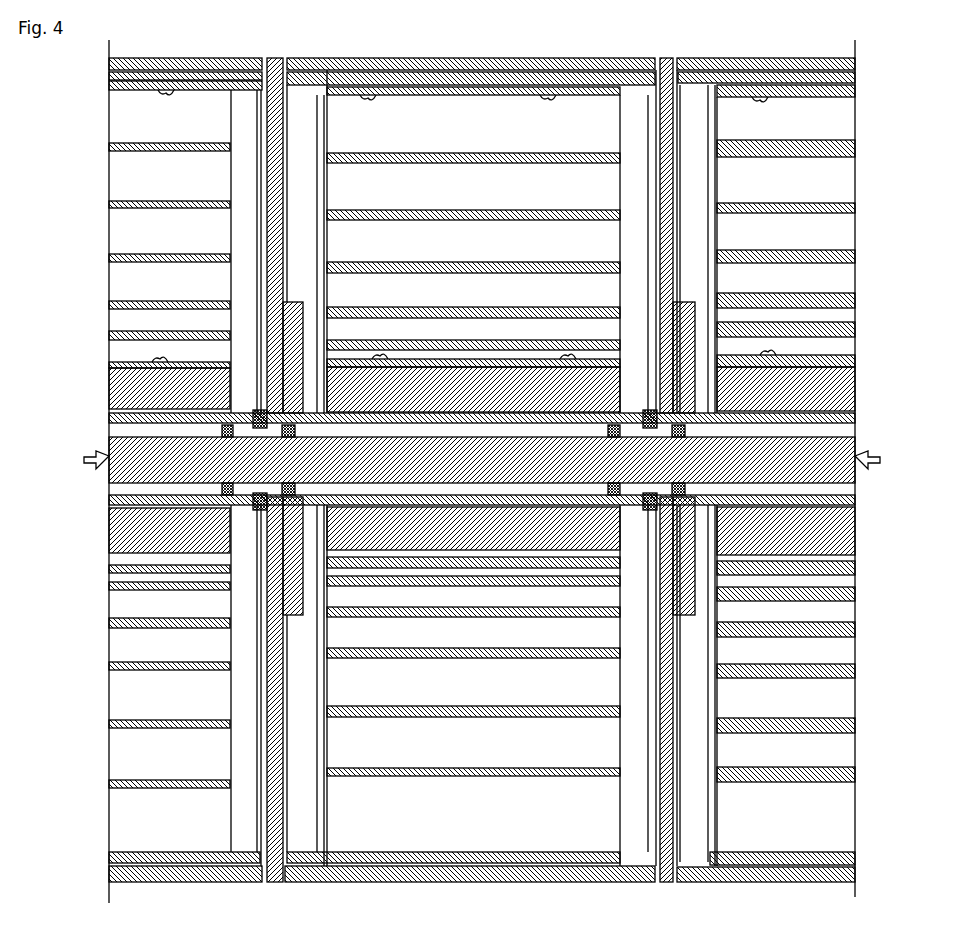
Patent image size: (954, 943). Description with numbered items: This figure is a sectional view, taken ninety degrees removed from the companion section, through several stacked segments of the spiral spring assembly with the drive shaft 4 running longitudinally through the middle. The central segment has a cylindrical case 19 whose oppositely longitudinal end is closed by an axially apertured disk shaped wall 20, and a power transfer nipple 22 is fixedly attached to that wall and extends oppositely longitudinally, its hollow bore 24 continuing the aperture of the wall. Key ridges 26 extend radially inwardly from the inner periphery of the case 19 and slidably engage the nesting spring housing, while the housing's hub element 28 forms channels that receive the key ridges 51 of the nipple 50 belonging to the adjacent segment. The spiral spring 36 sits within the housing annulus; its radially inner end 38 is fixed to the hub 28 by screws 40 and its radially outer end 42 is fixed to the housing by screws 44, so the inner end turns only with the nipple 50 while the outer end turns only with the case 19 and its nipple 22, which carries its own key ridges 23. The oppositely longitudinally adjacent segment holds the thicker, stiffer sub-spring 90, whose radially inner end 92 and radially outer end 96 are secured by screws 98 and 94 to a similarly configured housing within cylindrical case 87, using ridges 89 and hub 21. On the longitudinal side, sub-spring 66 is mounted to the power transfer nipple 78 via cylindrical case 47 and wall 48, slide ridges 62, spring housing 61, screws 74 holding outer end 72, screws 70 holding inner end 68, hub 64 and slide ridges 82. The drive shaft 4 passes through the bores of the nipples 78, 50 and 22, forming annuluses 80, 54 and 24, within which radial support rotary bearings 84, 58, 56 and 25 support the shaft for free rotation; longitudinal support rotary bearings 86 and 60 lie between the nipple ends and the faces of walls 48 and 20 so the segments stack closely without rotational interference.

The drive shaft 4 is at (875, 460).
The cylindrical case 19 is at (480, 58).
The disk shaped wall 20 is at (667, 70).
The hub 21 is at (845, 390).
The power transfer nipple 22 is at (840, 418).
The key ridges 23 is at (702, 540).
The hollow bore 24 is at (840, 432).
The radial support rotary bearing 25 is at (688, 432).
The key ridges 26 is at (306, 93).
The hub element 28 is at (318, 397).
The spiral spring 36 is at (450, 240).
The radially inner end 38 is at (462, 365).
The screws 40 is at (380, 360).
The radially outer end 42 is at (415, 95).
The screws 44 is at (548, 95).
The cylindrical case 47 is at (120, 66).
The wall 48 is at (277, 72).
The power transfer nipple 50 is at (485, 418).
The key ridges 51 is at (630, 410).
The annulus 54 is at (421, 430).
The radial support rotary bearing 56 is at (605, 490).
The radial support rotary bearing 58 is at (300, 430).
The longitudinal support rotary bearing 60 is at (645, 505).
The spring housing 61 is at (125, 77).
The slide ridges 62 is at (264, 75).
The hub 64 is at (122, 388).
The sub-spring 66 is at (122, 205).
The sub-spring inner end 68 is at (130, 365).
The screws 70 is at (170, 362).
The sub-spring outer end 72 is at (130, 90).
The screws 74 is at (170, 93).
The power transfer nipple 78 is at (125, 418).
The annulus 80 is at (84, 460).
The slide ridges 82 is at (240, 410).
The radial support rotary bearing 84 is at (205, 428).
The longitudinal support rotary bearing 86 is at (250, 510).
The cylindrical case 87 is at (858, 70).
The ridges 89 is at (770, 58).
The spiral sub-spring 90 is at (845, 205).
The radially inner end 92 is at (842, 362).
The screws 94 is at (775, 357).
The radially outer end 96 is at (857, 87).
The screws 98 is at (770, 97).